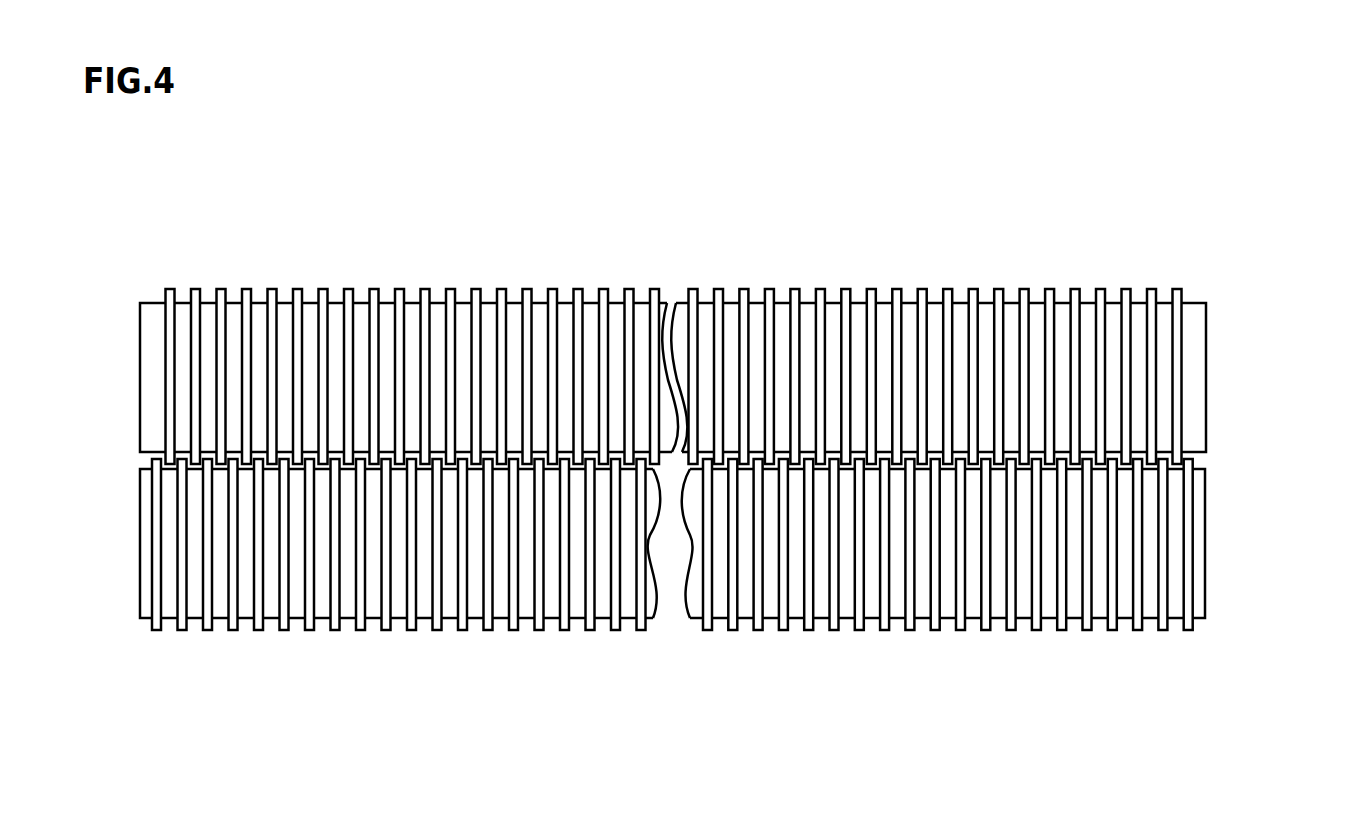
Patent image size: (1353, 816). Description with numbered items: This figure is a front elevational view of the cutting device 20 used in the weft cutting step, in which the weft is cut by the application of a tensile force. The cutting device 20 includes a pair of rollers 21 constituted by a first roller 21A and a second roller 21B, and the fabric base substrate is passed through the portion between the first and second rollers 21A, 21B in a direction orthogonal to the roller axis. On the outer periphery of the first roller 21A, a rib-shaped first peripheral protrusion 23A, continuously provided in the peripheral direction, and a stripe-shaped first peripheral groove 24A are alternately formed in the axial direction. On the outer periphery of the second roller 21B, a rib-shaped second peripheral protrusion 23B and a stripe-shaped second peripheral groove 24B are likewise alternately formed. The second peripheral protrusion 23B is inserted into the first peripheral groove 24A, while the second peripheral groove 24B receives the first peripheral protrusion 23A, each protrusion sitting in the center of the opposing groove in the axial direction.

The cutting device 20 is at (742, 450).
The pair of rollers 21 is at (742, 450).
The first roller 21A is at (717, 329).
The second roller 21B is at (717, 589).
The first peripheral protrusion 23A is at (795, 295).
The second peripheral protrusion 23B is at (590, 587).
The first peripheral groove 24A is at (732, 310).
The second peripheral groove 24B is at (766, 600).